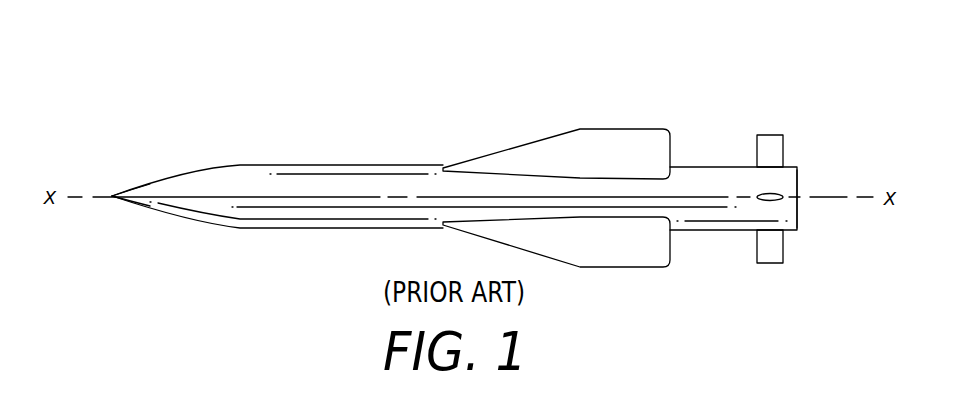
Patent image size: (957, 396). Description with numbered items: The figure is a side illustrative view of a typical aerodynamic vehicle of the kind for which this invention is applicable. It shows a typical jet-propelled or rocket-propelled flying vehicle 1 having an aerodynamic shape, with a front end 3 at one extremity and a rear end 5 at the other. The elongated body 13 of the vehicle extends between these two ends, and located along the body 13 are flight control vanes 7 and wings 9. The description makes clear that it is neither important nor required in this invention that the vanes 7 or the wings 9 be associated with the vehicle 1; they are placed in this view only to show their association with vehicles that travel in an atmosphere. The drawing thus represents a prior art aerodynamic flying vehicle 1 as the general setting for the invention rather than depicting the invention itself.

The flying vehicle 1 is at (227, 158).
The front end 3 is at (113, 192).
The rear end 5 is at (797, 183).
The flight control vanes 7 is at (761, 145).
The wings 9 is at (602, 148).
The body 13 is at (388, 190).